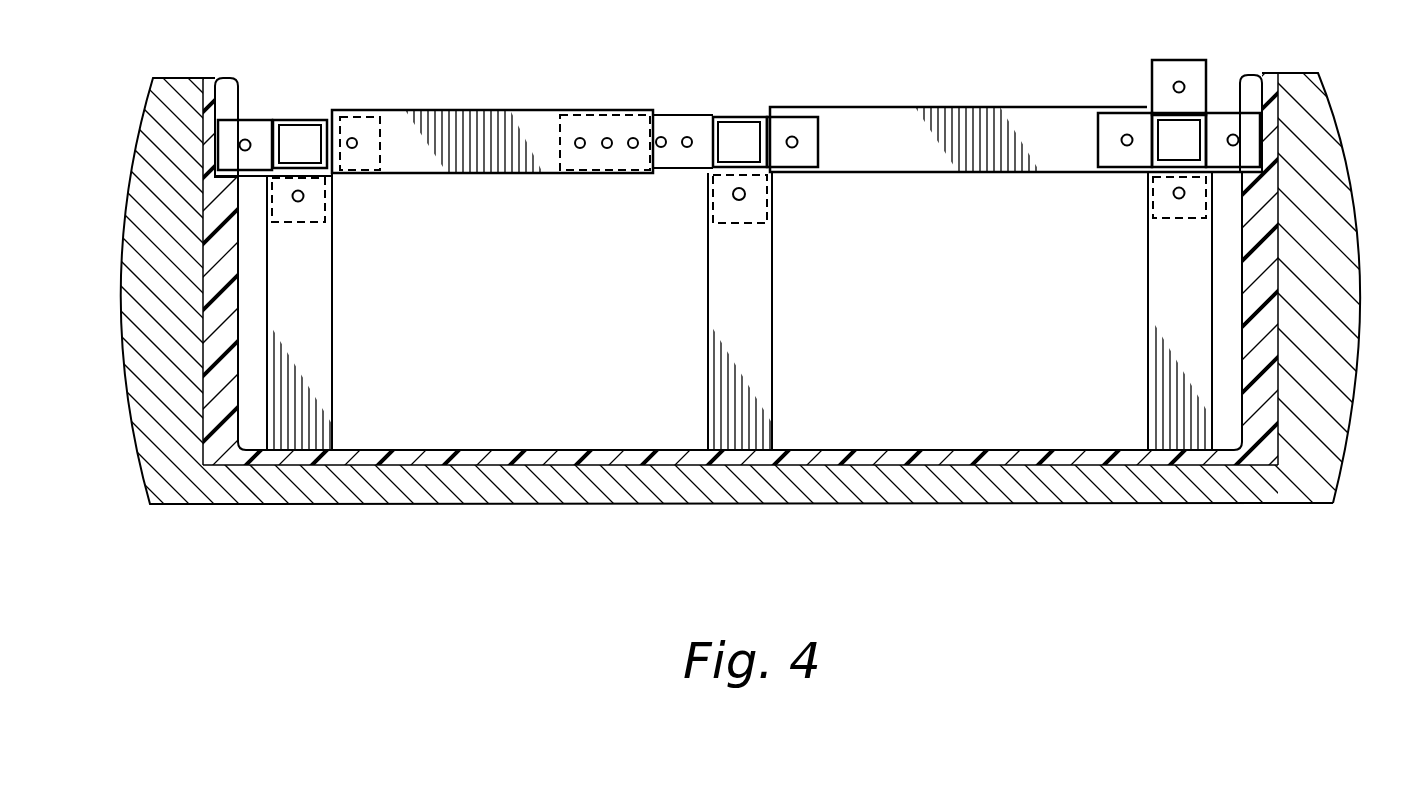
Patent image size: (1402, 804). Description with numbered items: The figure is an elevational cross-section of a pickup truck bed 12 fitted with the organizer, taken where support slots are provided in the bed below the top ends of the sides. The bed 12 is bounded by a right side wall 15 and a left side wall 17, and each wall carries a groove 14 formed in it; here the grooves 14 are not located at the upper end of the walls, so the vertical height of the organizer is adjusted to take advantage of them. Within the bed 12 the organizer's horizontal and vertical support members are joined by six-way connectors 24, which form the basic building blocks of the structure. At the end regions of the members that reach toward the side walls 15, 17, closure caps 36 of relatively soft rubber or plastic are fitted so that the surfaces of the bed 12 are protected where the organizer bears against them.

The truck bed 12 is at (857, 449).
The grooves 14 is at (225, 87).
The right side wall 15 is at (1330, 262).
The left side wall 17 is at (150, 290).
The six-way connector 24 is at (1178, 58).
The closure caps 36 is at (215, 152).